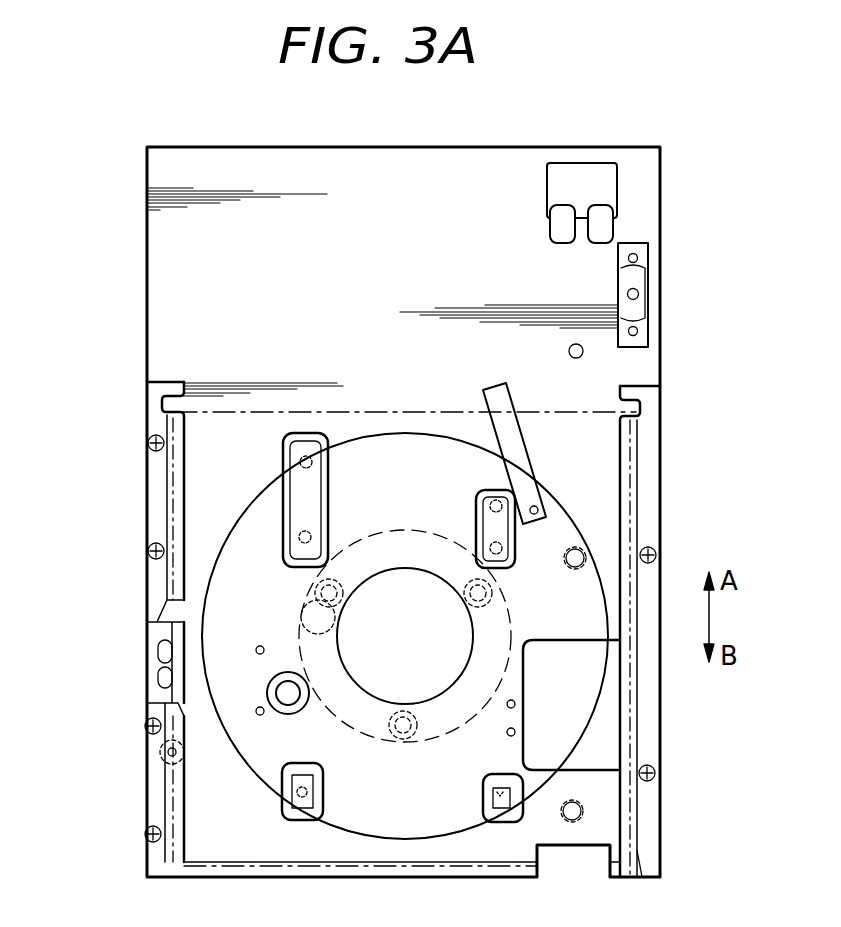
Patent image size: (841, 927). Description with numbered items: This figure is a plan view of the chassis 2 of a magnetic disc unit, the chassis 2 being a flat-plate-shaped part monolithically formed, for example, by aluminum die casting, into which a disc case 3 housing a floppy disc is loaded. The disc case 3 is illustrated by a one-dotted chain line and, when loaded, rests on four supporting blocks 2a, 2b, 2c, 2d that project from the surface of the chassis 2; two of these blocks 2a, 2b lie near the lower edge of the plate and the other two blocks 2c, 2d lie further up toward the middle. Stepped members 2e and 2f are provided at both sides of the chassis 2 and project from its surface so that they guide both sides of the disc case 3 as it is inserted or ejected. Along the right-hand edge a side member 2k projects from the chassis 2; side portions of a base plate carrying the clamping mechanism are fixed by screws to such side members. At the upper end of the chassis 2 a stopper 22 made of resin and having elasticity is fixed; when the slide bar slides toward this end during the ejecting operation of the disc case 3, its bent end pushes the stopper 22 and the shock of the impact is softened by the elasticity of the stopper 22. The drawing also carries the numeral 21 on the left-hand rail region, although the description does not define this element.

The chassis 2 is at (672, 334).
The stopper 22 is at (613, 227).
The guide rail 21 is at (148, 517).
The stepped member 2e is at (175, 488).
The side member 2k is at (651, 803).
The disc case 3 is at (232, 863).
The supporting block 2c is at (330, 491).
The supporting block 2d is at (476, 505).
The supporting block 2a is at (293, 817).
The supporting block 2b is at (500, 810).
The stepped member 2f is at (623, 715).